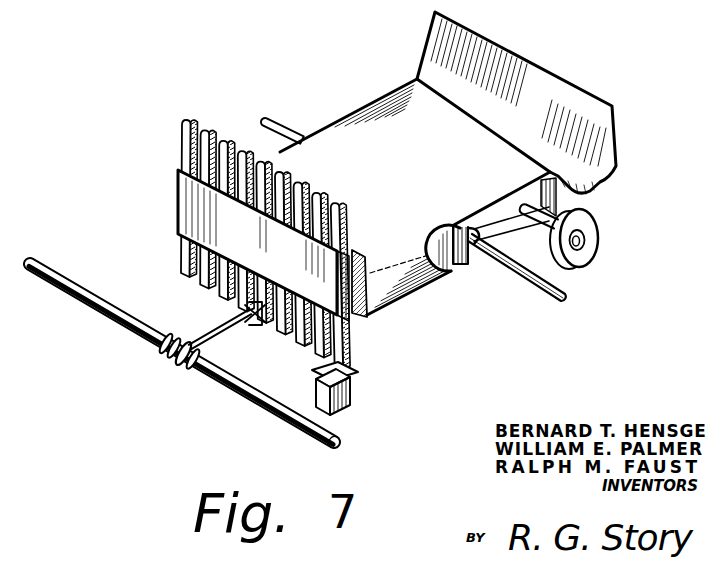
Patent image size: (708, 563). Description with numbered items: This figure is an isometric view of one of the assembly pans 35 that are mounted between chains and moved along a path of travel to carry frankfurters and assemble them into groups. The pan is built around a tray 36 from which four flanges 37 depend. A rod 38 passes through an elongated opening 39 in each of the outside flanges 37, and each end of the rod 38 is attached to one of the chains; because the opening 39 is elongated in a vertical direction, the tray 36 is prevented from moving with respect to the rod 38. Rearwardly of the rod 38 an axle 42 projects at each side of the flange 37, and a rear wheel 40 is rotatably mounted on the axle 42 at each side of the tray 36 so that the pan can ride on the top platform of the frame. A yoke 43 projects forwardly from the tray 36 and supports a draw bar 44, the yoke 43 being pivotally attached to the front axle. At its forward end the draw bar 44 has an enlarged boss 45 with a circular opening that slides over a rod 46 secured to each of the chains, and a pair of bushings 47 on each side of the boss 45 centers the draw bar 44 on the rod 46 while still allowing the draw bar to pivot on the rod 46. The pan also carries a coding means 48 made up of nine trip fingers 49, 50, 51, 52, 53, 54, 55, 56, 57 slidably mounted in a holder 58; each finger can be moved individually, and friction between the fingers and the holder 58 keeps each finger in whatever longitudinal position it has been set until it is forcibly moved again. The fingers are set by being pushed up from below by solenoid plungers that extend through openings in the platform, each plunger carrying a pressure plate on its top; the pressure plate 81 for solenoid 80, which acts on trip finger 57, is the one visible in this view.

The assembly pan 35 is at (390, 94).
The tray 36 is at (468, 143).
The flange 37 is at (460, 266).
The rod 38 is at (538, 292).
The elongated opening 39 is at (473, 226).
The rear wheel 40 is at (598, 224).
The axle 42 is at (524, 217).
The yoke 43 is at (260, 327).
The draw bar 44 is at (200, 340).
The enlarged boss 45 is at (173, 372).
The rod 46 is at (251, 403).
The bushing 47 is at (160, 357).
The coding means 48 is at (178, 198).
The trip finger 49 is at (186, 120).
The trip finger 50 is at (205, 130).
The trip finger 51 is at (223, 141).
The trip finger 52 is at (242, 151).
The trip finger 53 is at (260, 162).
The trip finger 54 is at (279, 172).
The trip finger 55 is at (298, 182).
The trip finger 56 is at (316, 193).
The trip finger 57 is at (335, 203).
The holder 58 is at (352, 315).
The solenoid 80 is at (352, 407).
The pressure plate 81 is at (357, 368).